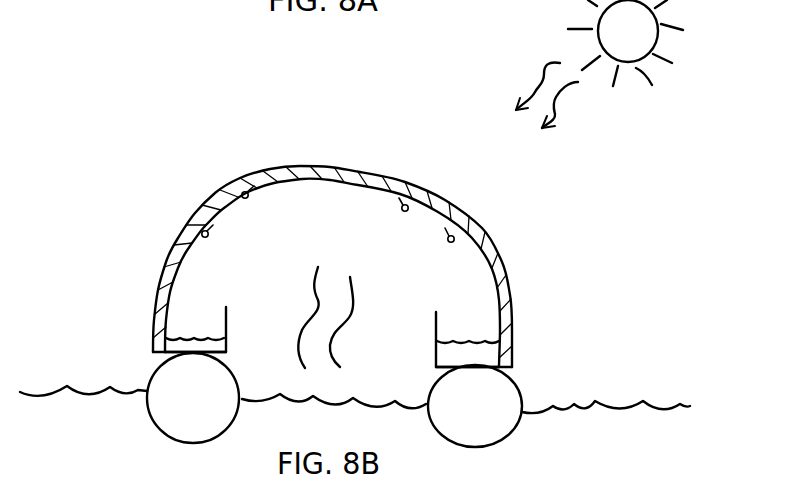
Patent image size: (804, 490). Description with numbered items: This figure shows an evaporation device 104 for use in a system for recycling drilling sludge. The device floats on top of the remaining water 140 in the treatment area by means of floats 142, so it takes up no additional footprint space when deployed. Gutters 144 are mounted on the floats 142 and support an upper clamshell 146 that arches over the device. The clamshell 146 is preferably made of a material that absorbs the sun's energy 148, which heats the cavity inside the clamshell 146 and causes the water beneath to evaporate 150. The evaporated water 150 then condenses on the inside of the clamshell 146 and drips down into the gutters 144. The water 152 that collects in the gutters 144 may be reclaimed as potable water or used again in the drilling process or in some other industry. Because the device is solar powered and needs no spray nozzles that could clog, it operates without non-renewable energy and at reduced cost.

The solar distillation apparatus 104 is at (172, 179).
The remaining water 140 is at (575, 404).
The floats 142 is at (167, 416).
The gutters 144 is at (227, 313).
The upper clamshell 146 is at (373, 176).
The sun's energy 148 is at (560, 98).
The evaporated water 150 is at (353, 316).
The water collected in the gutters 152 is at (194, 322).